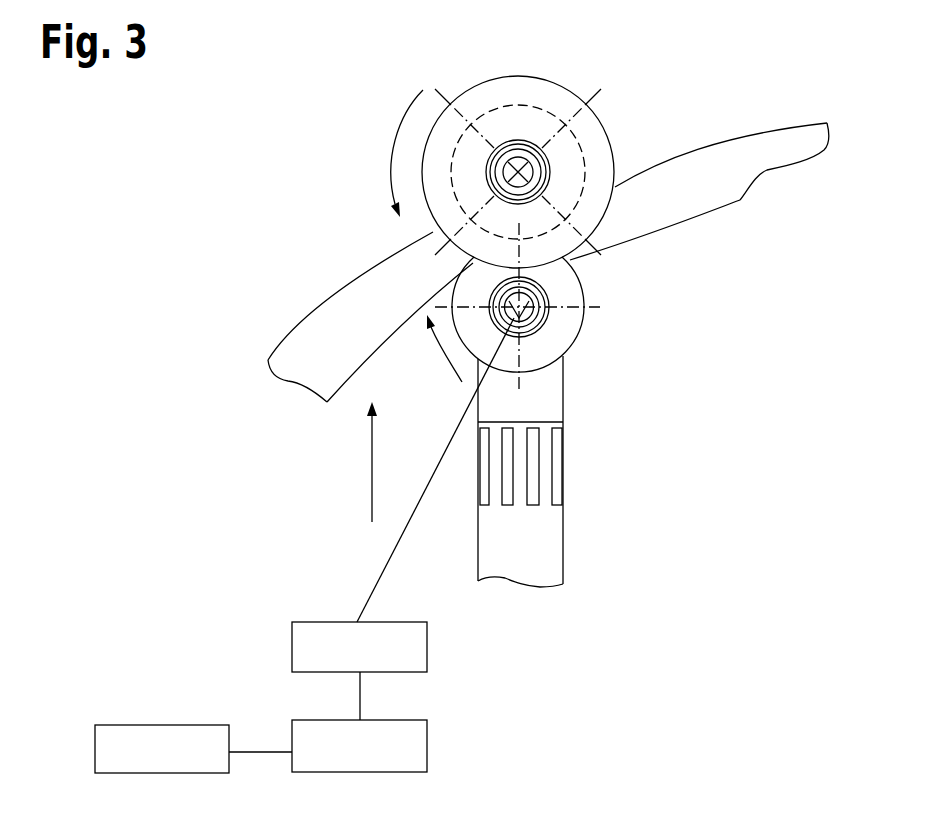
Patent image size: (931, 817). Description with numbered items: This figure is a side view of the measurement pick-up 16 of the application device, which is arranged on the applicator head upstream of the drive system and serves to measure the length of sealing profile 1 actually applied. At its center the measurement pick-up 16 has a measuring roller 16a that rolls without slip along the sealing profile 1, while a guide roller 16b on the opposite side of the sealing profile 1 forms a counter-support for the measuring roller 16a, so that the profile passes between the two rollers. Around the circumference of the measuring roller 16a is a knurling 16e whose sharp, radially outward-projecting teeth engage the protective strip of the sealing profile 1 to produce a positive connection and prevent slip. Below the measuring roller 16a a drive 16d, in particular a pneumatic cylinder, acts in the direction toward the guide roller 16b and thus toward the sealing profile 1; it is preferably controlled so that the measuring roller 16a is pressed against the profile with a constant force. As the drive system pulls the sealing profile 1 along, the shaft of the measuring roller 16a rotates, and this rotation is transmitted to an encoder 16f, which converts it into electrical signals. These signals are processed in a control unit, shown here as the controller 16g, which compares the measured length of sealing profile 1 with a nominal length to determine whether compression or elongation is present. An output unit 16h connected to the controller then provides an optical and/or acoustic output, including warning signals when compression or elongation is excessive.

The sealing profile 1 is at (330, 318).
The measurement pick-up 16 is at (324, 168).
The measuring roller 16a is at (563, 327).
The guide roller 16b is at (592, 132).
The drive 16d is at (520, 467).
The knurling 16e is at (582, 280).
The encoder 16f is at (427, 647).
The controller 16g is at (427, 747).
The output unit 16h is at (155, 725).